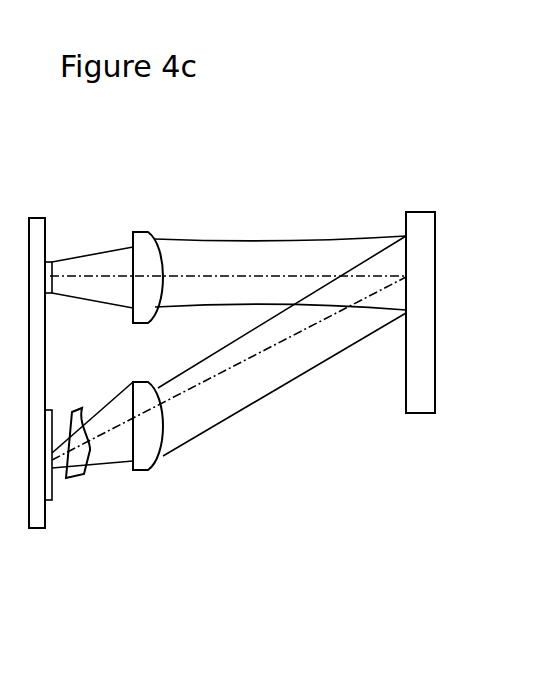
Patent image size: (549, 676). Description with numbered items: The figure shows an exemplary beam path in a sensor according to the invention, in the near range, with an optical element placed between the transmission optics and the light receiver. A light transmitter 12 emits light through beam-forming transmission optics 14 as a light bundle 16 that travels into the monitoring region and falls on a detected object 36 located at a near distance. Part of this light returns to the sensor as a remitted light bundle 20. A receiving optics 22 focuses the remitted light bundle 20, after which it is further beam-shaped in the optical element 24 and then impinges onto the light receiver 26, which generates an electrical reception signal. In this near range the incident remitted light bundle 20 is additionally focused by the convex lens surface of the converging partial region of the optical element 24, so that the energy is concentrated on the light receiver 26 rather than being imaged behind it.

The light transmitter 12 is at (69, 238).
The transmission optics 14 is at (109, 243).
The light bundle 16 is at (228, 239).
The detected object 36 is at (424, 282).
The remitted light bundle 20 is at (229, 348).
The receiving optics 22 is at (135, 448).
The optical element 24 is at (102, 483).
The light receiver 26 is at (54, 405).